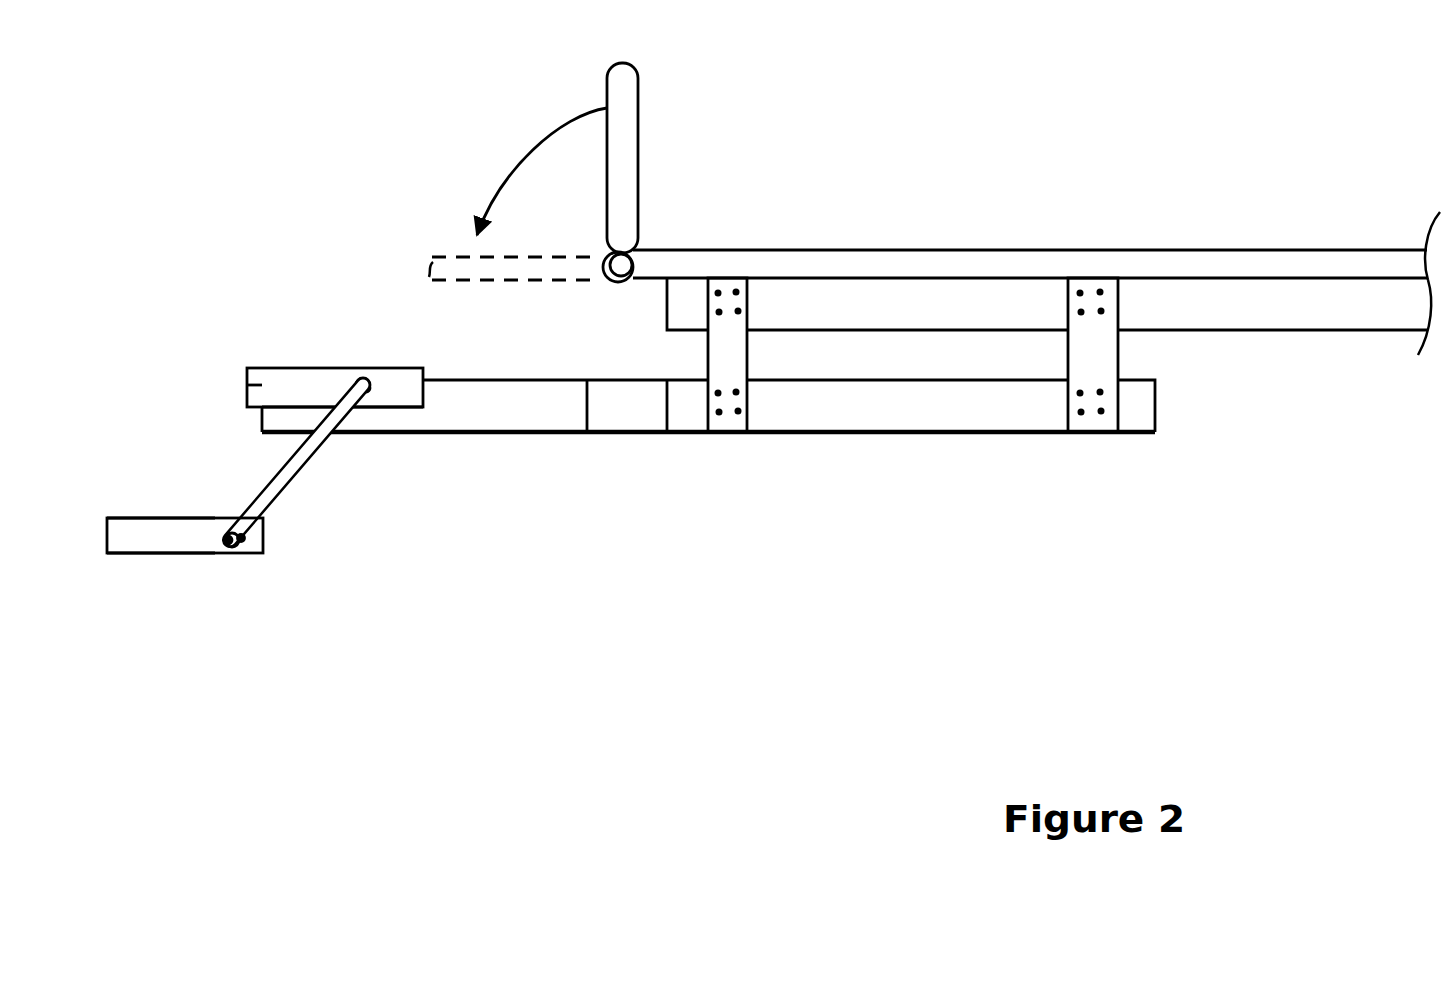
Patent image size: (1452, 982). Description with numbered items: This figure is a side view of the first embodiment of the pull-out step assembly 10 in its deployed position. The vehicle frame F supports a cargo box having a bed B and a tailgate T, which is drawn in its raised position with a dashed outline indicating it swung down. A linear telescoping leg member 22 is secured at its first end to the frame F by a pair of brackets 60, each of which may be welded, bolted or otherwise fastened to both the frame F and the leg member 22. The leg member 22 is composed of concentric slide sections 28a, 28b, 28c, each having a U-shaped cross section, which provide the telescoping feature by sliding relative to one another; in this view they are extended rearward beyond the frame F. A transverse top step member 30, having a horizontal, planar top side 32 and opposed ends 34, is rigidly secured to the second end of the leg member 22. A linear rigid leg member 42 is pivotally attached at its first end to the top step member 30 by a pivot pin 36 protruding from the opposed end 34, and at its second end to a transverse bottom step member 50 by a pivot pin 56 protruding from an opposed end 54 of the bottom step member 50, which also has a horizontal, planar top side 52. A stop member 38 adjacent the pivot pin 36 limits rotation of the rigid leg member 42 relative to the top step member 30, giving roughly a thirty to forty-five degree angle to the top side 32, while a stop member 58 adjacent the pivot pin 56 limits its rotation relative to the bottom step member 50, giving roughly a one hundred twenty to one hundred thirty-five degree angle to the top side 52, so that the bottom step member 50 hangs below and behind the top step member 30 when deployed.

The pull-out step assembly 10 is at (656, 657).
The telescoping leg member 22 is at (785, 445).
The concentric slide section 28a is at (925, 400).
The concentric slide section 28b is at (626, 430).
The concentric slide section 28c is at (498, 408).
The transverse top step member 30 is at (243, 385).
The horizontal, planar top side 32 is at (290, 368).
The opposed end 34 is at (332, 382).
The pivot pin 36 is at (363, 382).
The stop member 38 is at (372, 395).
The rigid leg member 42 is at (307, 463).
The transverse bottom step member 50 is at (138, 560).
The horizontal, planar top side 52 is at (138, 518).
The opposed end 54 is at (182, 537).
The pivot pin 56 is at (226, 546).
The stop member 58 is at (260, 538).
The bracket 60 is at (722, 358).
The tailgate T is at (625, 155).
The bed B is at (908, 258).
The vehicle frame F is at (1313, 303).